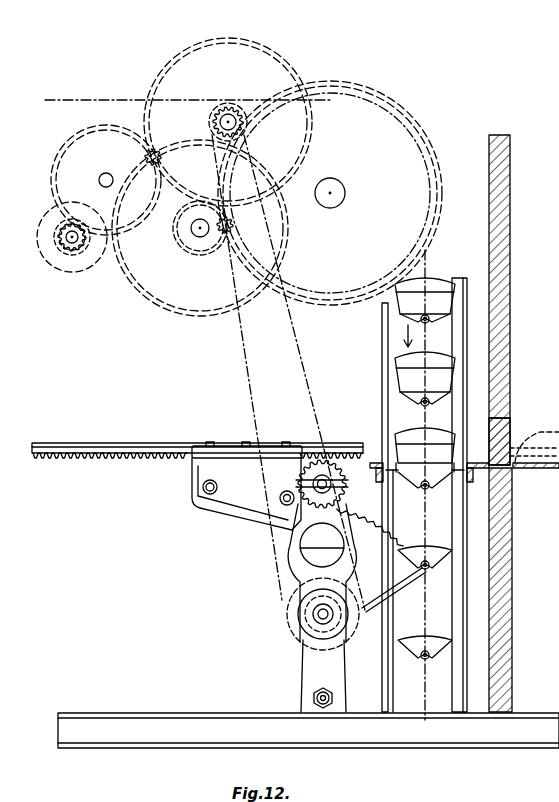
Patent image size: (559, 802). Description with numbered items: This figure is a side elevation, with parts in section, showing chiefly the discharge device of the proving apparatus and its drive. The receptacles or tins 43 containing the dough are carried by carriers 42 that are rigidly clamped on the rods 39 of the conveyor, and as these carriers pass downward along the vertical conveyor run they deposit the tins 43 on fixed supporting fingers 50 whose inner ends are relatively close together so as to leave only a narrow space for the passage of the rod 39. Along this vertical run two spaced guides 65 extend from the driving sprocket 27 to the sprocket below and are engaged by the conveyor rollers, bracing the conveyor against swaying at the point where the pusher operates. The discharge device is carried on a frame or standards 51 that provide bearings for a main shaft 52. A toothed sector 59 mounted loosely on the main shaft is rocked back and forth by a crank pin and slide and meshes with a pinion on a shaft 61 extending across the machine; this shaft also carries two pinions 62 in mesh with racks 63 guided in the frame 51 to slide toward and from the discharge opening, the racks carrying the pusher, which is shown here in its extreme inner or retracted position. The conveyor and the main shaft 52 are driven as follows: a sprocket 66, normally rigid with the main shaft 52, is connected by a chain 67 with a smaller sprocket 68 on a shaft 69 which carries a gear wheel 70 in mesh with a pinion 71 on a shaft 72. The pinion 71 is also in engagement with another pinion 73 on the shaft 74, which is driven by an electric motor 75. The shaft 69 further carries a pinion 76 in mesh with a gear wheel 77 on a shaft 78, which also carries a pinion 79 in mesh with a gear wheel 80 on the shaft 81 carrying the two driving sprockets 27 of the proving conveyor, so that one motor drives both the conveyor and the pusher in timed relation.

The gear wheel 70 is at (250, 48).
The smaller sprocket 68 is at (240, 110).
The pinion 76 is at (226, 106).
The shaft 69 is at (222, 122).
The driving sprockets 27 is at (392, 118).
The gear wheel 80 is at (333, 304).
The shaft 81 is at (346, 193).
The pinion 71 is at (75, 132).
The shaft 72 is at (100, 180).
The shaft 74 is at (70, 242).
The pinion 73 is at (84, 250).
The electric motor 75 is at (104, 258).
The gear wheel 77 is at (196, 306).
The shaft 78 is at (195, 234).
The pinion 79 is at (205, 250).
The chain 67 is at (240, 352).
The spaced guides 65 is at (456, 312).
The tins 43 is at (432, 292).
The carriers 42 is at (436, 486).
The rods 39 is at (435, 493).
The fingers 50 is at (412, 488).
The toothed sector 59 is at (402, 570).
The racks 63 is at (122, 448).
The frame or standards 51 is at (234, 506).
The pinions 62 is at (281, 496).
The shaft 61 is at (342, 506).
The main shaft 52 is at (316, 612).
The sprocket 66 is at (284, 636).